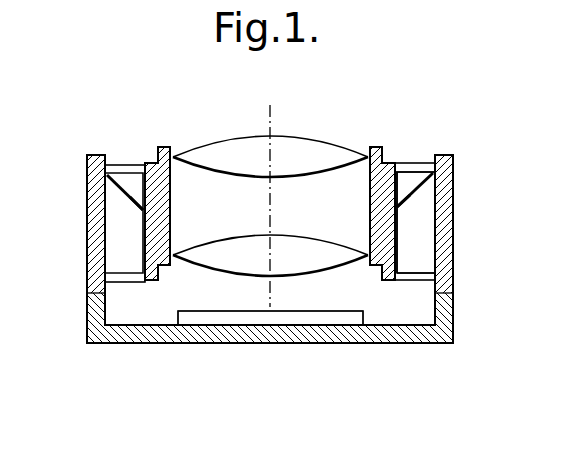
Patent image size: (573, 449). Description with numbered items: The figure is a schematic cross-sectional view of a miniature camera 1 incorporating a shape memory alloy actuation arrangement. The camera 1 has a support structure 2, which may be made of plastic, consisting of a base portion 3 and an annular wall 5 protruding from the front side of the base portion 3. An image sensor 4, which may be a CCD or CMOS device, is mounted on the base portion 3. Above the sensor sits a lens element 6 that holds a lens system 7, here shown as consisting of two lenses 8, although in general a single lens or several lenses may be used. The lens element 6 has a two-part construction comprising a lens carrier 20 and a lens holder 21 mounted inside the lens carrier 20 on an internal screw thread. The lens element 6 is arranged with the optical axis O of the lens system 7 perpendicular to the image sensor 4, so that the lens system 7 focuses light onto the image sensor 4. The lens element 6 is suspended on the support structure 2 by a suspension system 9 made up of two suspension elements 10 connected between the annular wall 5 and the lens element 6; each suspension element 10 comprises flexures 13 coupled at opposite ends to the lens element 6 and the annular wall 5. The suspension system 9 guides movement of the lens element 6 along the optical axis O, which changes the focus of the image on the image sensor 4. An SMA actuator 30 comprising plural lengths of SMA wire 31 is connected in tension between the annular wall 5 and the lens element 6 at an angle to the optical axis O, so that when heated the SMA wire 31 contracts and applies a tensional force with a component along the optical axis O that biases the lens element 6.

The camera 1 is at (50, 256).
The support structure 2 is at (447, 356).
The base portion 3 is at (275, 335).
The image sensor 4 is at (198, 320).
The annular wall 5 is at (445, 232).
The lens element 6 is at (391, 146).
The lens system 7 is at (270, 190).
The lens 8 is at (296, 146).
The suspension system 9 is at (283, 197).
The suspension element 10 is at (427, 166).
The flexure 13 is at (412, 176).
The lens carrier 20 is at (410, 196).
The lens holder 21 is at (370, 150).
The SMA actuator 30 is at (117, 190).
The SMA wire 31 is at (133, 210).
The optical axis O is at (268, 112).